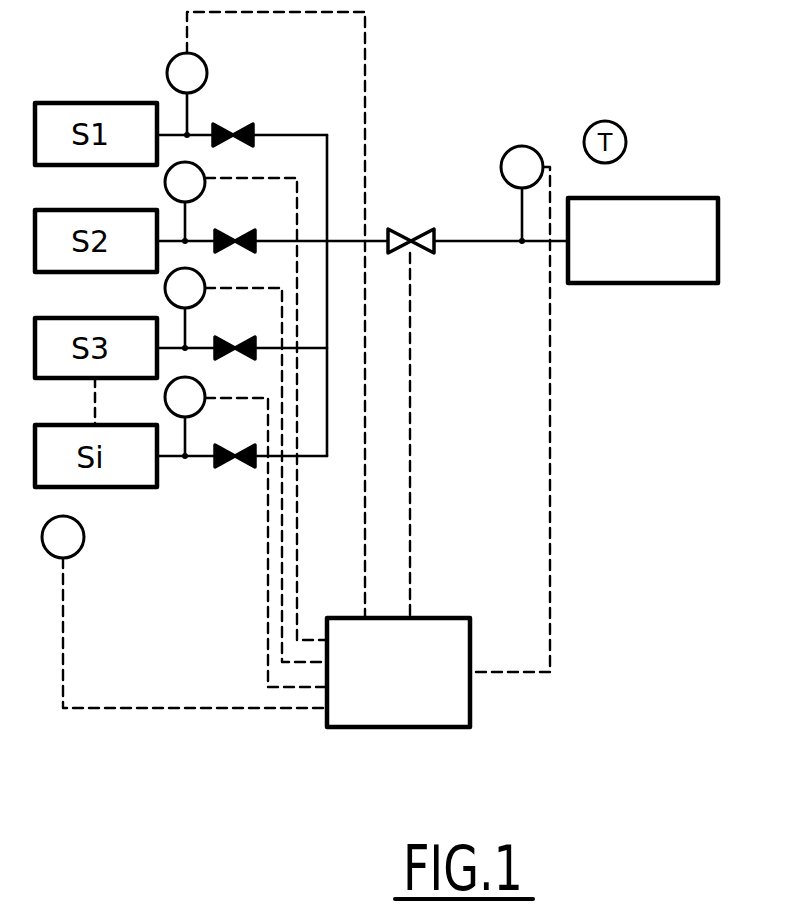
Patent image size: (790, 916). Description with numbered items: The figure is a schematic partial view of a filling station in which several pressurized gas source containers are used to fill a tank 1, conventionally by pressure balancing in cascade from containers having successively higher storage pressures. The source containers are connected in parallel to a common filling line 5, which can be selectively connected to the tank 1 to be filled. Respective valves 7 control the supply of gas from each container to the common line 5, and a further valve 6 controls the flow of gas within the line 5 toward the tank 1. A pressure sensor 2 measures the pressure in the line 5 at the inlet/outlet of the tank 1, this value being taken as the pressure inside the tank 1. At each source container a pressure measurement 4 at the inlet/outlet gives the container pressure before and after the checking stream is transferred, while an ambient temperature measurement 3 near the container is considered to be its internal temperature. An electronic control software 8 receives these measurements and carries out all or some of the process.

The tank 1 is at (655, 262).
The pressure sensor 2 is at (545, 150).
The ambient temperature measurement 3 is at (47, 567).
The pressure measurement 4 is at (209, 73).
The common filling line 5 is at (348, 236).
The valve 6 is at (425, 262).
The valves 7 is at (236, 122).
The electronic control software 8 is at (411, 693).